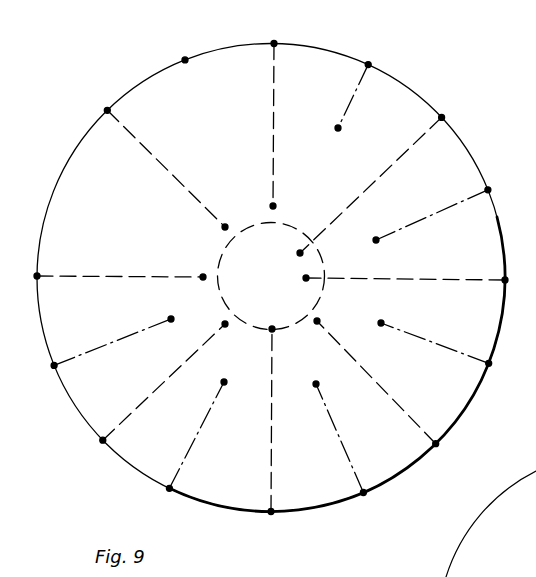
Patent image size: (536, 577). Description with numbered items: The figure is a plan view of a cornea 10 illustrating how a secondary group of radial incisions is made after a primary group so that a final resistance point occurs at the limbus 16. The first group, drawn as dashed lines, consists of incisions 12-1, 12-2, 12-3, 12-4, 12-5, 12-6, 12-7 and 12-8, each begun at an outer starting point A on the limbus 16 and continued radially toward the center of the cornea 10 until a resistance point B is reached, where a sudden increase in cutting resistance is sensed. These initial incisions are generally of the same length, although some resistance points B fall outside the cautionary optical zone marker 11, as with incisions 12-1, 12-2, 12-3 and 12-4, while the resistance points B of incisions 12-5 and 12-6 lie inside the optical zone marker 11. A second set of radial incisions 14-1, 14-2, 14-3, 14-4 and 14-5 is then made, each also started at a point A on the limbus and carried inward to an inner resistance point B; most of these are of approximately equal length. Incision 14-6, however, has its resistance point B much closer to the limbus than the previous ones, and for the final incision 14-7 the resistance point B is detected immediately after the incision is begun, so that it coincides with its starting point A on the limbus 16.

The cornea 10 is at (82, 103).
The optical zone marker 11 is at (219, 266).
The radial incision of first group 12-1 is at (110, 276).
The radial incision of first group 12-2 is at (140, 405).
The radial incision of first group 12-3 is at (270, 420).
The radial incision of first group 12-4 is at (388, 395).
The radial incision of first group 12-5 is at (432, 279).
The radial incision of first group 12-6 is at (399, 157).
The radial incision of first group 12-7 is at (274, 140).
The radial incision of first group 12-8 is at (133, 130).
The radial incision of second group 14-1 is at (113, 342).
The radial incision of second group 14-2 is at (196, 435).
The radial incision of second group 14-3 is at (333, 423).
The radial incision of second group 14-4 is at (424, 339).
The radial incision of second group 14-5 is at (430, 216).
The radial incision of second group 14-6 is at (352, 100).
The final radial incision 14-7 is at (185, 60).
The limbus 16 is at (501, 233).
The outer starting point A is at (368, 65).
The resistance point B is at (338, 128).